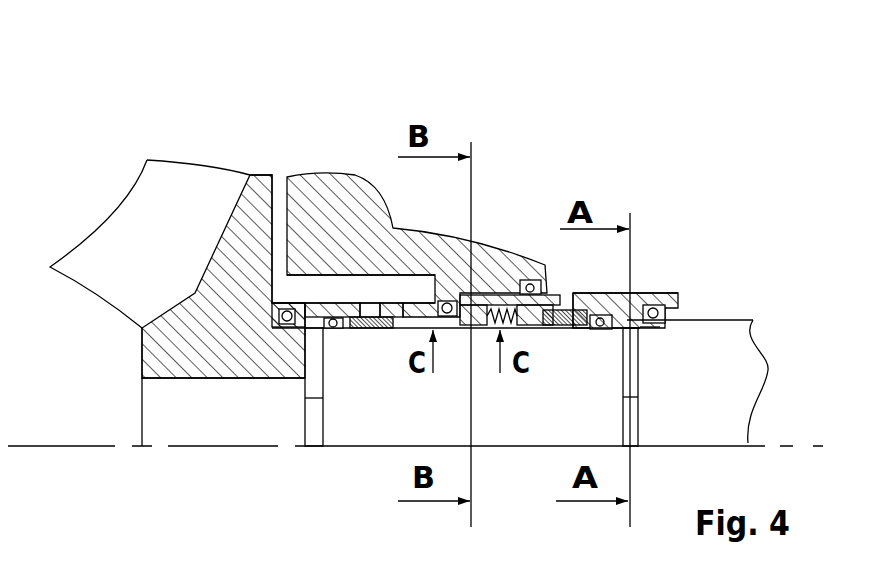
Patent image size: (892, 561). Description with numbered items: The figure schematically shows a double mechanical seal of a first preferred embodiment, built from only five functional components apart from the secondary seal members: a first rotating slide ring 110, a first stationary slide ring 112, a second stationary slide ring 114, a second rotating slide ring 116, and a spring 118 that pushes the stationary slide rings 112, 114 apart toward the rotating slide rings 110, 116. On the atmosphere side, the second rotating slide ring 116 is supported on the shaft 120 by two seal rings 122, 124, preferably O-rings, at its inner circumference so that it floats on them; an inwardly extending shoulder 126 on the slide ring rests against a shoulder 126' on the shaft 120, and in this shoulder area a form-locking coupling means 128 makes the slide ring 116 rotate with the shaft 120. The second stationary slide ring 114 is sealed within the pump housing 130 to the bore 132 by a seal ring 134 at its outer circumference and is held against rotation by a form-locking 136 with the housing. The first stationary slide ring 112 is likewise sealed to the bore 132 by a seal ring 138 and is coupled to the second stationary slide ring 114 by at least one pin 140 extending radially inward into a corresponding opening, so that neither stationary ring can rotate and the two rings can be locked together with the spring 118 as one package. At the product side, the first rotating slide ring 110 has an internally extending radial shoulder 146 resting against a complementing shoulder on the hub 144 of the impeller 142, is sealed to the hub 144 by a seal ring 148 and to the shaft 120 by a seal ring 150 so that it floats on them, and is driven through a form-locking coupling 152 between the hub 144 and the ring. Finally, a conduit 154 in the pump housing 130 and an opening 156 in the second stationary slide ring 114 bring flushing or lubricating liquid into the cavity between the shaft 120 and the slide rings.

The first rotating slide ring 110 is at (283, 300).
The first stationary slide ring 112 is at (387, 277).
The second stationary slide ring 114 is at (538, 330).
The second rotating slide ring 116 is at (640, 293).
The spring 118 is at (502, 330).
The shaft 120 is at (450, 408).
The seal ring 122 is at (603, 293).
The seal ring 124 is at (657, 293).
The shoulder 126 is at (724, 344).
The shoulder 126' is at (739, 381).
The coupling means 128 is at (640, 343).
The pump housing 130 is at (284, 235).
The bore 132 is at (422, 306).
The seal ring 134 is at (570, 275).
The form-locking 136 is at (472, 300).
The seal ring 138 is at (445, 300).
The pin 140 is at (478, 330).
The impeller 142 is at (162, 281).
The hub 144 is at (253, 454).
The shoulder 146 is at (223, 353).
The seal ring 148 is at (272, 307).
The seal ring 150 is at (338, 232).
The coupling 152 is at (312, 358).
The conduit 154 is at (495, 290).
The opening 156 is at (516, 290).